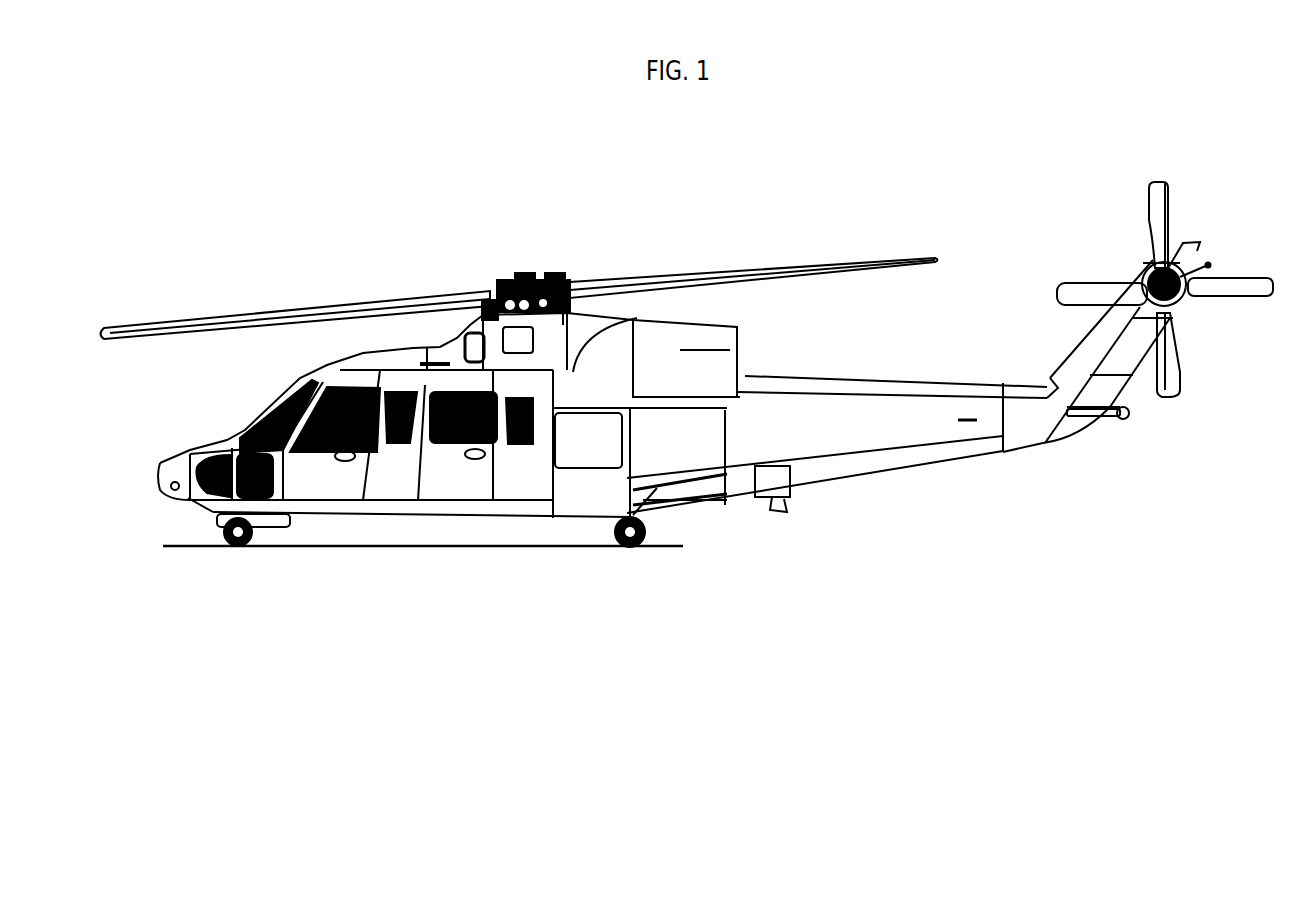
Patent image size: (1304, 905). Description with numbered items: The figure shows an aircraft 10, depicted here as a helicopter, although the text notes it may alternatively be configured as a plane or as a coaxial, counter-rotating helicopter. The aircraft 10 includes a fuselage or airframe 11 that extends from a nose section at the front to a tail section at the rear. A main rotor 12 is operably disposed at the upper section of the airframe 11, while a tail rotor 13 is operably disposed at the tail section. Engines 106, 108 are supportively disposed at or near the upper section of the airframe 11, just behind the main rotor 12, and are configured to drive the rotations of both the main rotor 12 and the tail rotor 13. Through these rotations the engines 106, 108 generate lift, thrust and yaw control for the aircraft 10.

The aircraft 10 is at (1004, 492).
The airframe 11 is at (745, 430).
The main rotor 12 is at (213, 320).
The tail rotor 13 is at (1140, 268).
The engine 106 is at (760, 362).
The engine 108 is at (815, 348).